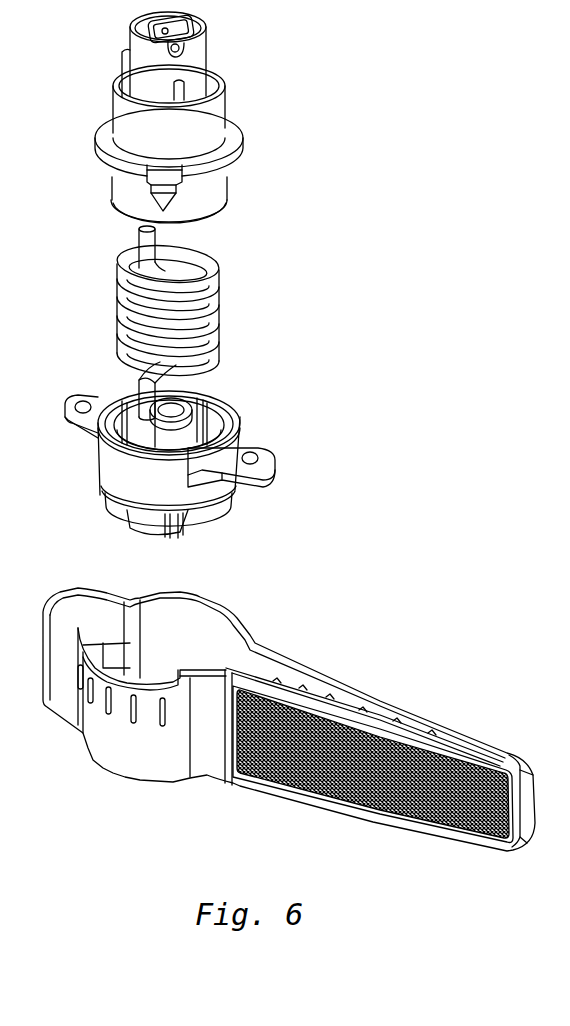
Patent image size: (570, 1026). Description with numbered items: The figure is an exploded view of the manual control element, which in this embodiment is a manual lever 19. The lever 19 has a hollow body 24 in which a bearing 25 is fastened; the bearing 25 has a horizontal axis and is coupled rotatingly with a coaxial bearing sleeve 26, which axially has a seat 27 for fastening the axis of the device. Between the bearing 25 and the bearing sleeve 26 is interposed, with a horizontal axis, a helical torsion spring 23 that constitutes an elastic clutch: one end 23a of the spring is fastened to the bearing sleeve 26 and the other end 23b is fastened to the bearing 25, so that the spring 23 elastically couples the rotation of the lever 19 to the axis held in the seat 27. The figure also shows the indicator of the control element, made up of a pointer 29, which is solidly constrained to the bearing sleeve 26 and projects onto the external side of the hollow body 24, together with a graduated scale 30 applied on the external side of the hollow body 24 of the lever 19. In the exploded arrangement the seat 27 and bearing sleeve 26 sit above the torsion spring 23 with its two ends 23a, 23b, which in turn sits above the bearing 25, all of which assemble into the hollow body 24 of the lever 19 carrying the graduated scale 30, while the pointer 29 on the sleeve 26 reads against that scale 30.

The manual lever 19 is at (381, 690).
The torsion spring 23 is at (214, 286).
The end of the torsion spring 23a is at (157, 236).
The end of the torsion spring 23b is at (156, 392).
The hollow body 24 is at (256, 621).
The bearing 25 is at (274, 462).
The bearing sleeve 26 is at (230, 117).
The seat 27 is at (184, 24).
The pointer 29 is at (170, 201).
The graduated scale 30 is at (97, 684).